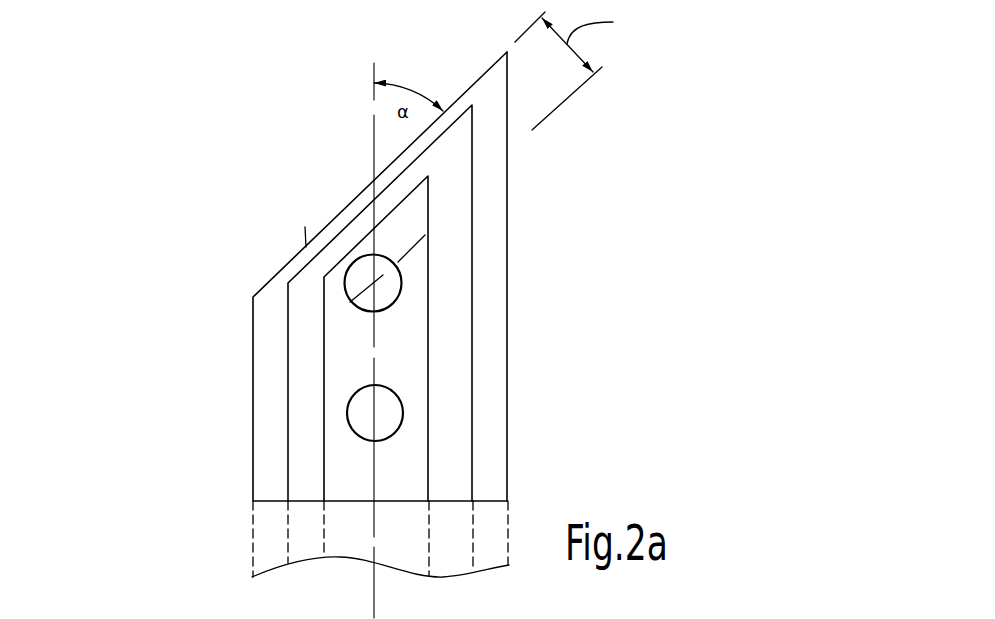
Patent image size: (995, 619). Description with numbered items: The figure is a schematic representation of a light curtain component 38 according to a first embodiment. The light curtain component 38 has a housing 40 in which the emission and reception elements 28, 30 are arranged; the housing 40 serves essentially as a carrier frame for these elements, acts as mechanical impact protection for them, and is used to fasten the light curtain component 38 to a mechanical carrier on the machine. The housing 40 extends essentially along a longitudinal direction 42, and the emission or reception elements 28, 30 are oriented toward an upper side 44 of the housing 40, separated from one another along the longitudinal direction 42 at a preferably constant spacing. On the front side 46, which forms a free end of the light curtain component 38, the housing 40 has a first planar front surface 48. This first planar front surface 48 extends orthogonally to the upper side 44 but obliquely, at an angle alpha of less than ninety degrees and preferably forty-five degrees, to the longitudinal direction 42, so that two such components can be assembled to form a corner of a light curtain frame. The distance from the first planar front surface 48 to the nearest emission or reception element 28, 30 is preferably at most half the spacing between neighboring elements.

The light curtain component 38 is at (223, 157).
The housing 40 is at (498, 363).
The longitudinal direction 42 is at (373, 95).
The upper side 44 is at (450, 290).
The front side 46 is at (323, 173).
The first planar front surface 48 is at (303, 245).
The emission element 28 is at (362, 283).
The reception element 30 is at (362, 413).